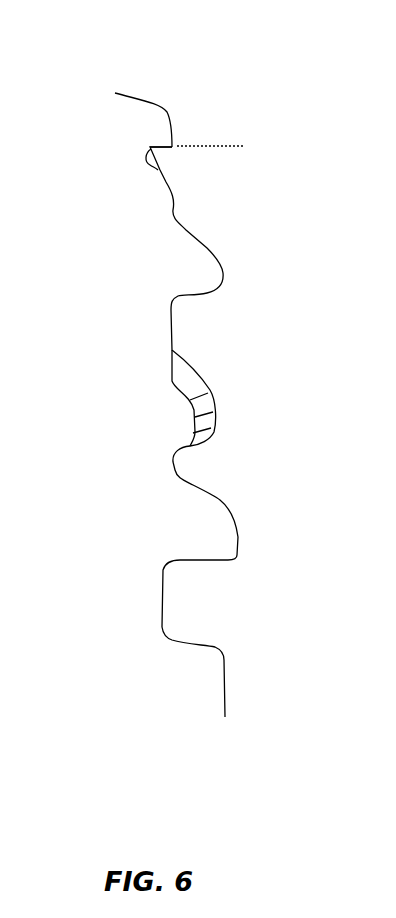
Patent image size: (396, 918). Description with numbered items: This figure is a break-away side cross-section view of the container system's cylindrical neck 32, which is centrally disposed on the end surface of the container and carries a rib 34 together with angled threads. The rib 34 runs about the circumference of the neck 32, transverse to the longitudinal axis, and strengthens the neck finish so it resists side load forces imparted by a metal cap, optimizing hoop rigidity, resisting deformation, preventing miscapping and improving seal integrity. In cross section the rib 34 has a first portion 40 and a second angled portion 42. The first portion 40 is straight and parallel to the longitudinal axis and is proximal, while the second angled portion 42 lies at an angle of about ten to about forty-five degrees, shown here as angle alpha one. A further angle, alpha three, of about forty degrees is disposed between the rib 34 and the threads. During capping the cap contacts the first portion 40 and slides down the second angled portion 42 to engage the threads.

The neck 32 is at (326, 226).
The rib 34 is at (172, 142).
The first portion 40 is at (172, 142).
The second angled portion 42 is at (157, 167).